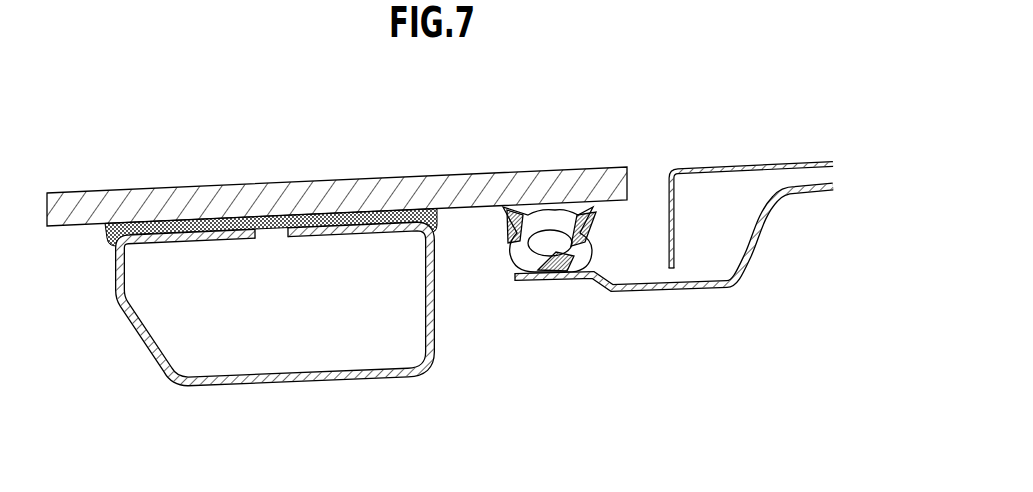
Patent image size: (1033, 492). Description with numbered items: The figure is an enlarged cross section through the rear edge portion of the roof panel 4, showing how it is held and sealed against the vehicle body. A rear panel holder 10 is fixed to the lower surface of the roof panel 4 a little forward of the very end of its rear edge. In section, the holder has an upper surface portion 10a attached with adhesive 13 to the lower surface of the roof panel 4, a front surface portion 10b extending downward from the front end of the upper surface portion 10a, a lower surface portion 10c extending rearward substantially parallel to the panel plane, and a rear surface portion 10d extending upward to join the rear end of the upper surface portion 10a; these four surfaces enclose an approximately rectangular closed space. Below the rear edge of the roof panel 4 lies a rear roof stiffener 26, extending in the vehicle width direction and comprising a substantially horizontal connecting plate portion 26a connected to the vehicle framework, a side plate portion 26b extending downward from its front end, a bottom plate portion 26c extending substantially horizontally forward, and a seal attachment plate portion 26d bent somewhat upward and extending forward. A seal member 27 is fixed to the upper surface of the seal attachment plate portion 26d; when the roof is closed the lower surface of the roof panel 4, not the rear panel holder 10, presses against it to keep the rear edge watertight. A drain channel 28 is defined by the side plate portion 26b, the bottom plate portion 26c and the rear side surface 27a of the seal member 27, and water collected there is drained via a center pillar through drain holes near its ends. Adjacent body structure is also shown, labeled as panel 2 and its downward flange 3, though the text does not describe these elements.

The roof panel 2 is at (765, 164).
The panel flange 3 is at (667, 190).
The roof panel 4 is at (181, 192).
The rear panel holder 10 is at (242, 345).
The upper surface portion 10a is at (340, 236).
The front surface portion 10b is at (115, 285).
The lower surface portion 10c is at (310, 386).
The rear surface portion 10d is at (424, 308).
The adhesive 13 is at (305, 221).
The rear roof stiffener 26 is at (677, 278).
The connecting plate portion 26a is at (821, 195).
The side plate portion 26b is at (768, 247).
The bottom plate portion 26c is at (680, 294).
The seal attachment plate portion 26d is at (547, 282).
The seal member 27 is at (558, 239).
The side surface 27a is at (593, 244).
The drain channel 28 is at (626, 277).